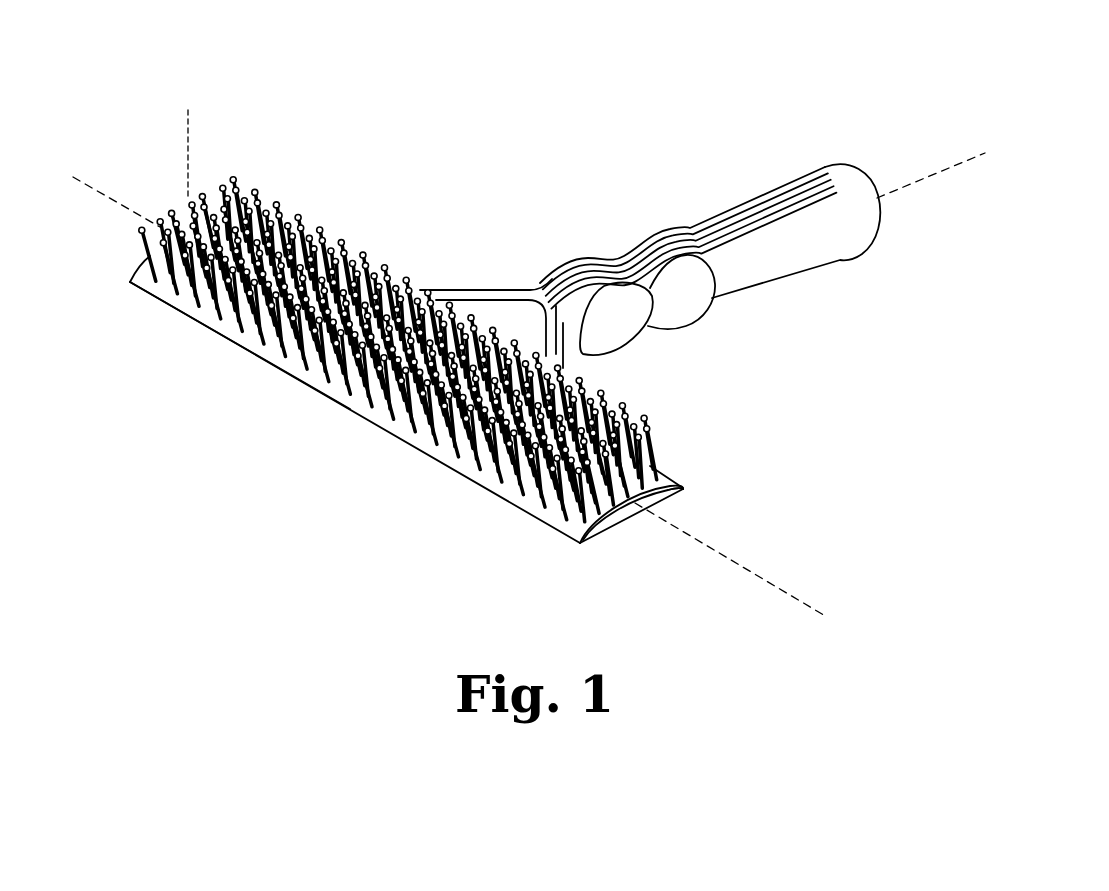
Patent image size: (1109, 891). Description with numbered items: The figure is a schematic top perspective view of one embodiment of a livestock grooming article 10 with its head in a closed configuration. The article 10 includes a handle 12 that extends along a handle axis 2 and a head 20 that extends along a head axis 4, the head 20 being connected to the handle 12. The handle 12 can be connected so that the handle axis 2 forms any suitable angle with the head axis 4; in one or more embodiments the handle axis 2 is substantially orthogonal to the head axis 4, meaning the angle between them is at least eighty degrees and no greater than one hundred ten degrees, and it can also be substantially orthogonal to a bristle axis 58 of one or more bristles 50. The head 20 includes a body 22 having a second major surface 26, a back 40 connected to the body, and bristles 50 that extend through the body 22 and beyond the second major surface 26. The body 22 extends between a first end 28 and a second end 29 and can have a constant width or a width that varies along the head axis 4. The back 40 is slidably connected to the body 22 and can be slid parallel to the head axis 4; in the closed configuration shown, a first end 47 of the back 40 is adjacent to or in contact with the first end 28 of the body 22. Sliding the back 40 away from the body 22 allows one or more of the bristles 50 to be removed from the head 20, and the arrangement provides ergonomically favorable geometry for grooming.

The handle axis 2 is at (943, 171).
The head axis 4 is at (783, 592).
The livestock grooming article 10 is at (651, 178).
The handle 12 is at (829, 263).
The head 20 is at (298, 418).
The body 22 is at (463, 475).
The second major surface 26 is at (238, 336).
The first end 28 is at (574, 543).
The second end 29 is at (131, 282).
The back 40 is at (603, 533).
The first end of the back 47 is at (683, 487).
The bristles 50 is at (187, 198).
The bristle axis 58 is at (189, 110).